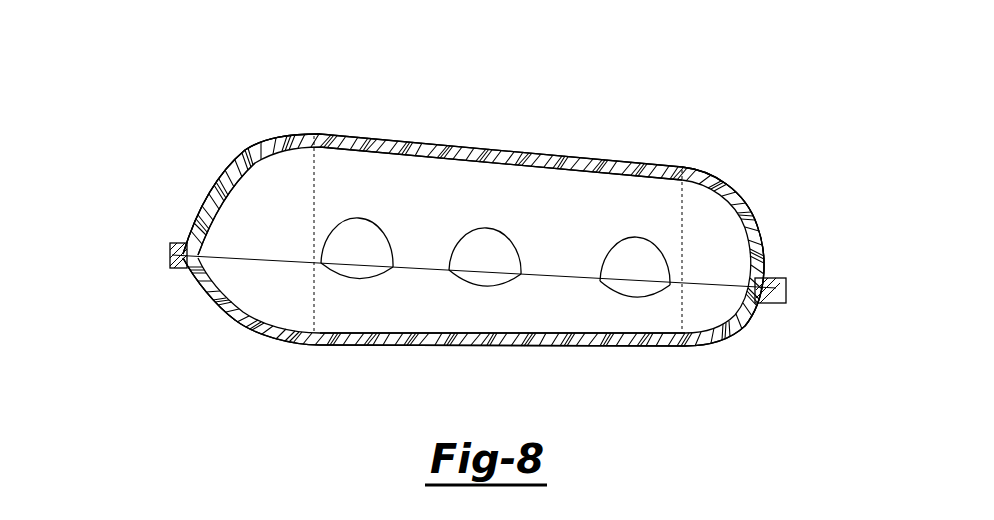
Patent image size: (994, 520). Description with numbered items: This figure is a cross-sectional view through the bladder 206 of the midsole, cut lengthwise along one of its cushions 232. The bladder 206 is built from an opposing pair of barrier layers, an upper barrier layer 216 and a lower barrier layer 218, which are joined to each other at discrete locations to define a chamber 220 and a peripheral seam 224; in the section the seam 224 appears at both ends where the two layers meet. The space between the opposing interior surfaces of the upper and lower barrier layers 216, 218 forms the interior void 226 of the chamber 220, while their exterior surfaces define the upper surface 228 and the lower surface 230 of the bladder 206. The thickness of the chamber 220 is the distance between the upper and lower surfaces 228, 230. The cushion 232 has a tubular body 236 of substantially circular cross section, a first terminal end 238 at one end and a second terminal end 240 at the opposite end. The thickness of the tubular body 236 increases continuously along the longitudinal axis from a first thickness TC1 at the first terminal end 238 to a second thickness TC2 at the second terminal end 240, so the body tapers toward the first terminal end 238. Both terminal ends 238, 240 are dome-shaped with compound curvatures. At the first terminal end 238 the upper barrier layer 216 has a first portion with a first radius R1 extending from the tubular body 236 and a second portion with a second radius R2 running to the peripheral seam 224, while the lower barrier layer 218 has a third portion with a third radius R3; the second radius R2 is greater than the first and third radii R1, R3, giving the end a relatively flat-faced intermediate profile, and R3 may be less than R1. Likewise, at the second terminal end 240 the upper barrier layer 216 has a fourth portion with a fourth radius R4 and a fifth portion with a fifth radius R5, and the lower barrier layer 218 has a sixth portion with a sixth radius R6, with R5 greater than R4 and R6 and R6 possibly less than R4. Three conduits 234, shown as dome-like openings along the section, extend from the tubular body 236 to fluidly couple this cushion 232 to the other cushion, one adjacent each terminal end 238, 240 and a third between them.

The bladder 206 is at (719, 128).
The upper barrier layer 216 is at (262, 140).
The lower barrier layer 218 is at (245, 336).
The chamber 220 is at (381, 136).
The peripheral seam 224 is at (170, 253).
The interior void 226 is at (488, 207).
The upper surface 228 is at (598, 156).
The lower surface 230 is at (623, 347).
The cushion 232 is at (352, 108).
The conduit 234 is at (360, 226).
The tubular body 236 is at (420, 346).
The first terminal end 238 is at (756, 218).
The second terminal end 240 is at (217, 192).
The first radius R1 is at (737, 186).
The second radius R2 is at (765, 245).
The third radius R3 is at (750, 334).
The fourth radius R4 is at (231, 161).
The fifth radius R5 is at (195, 222).
The sixth radius R6 is at (196, 302).
The first thickness TC1 is at (682, 95).
The second thickness TC2 is at (314, 67).